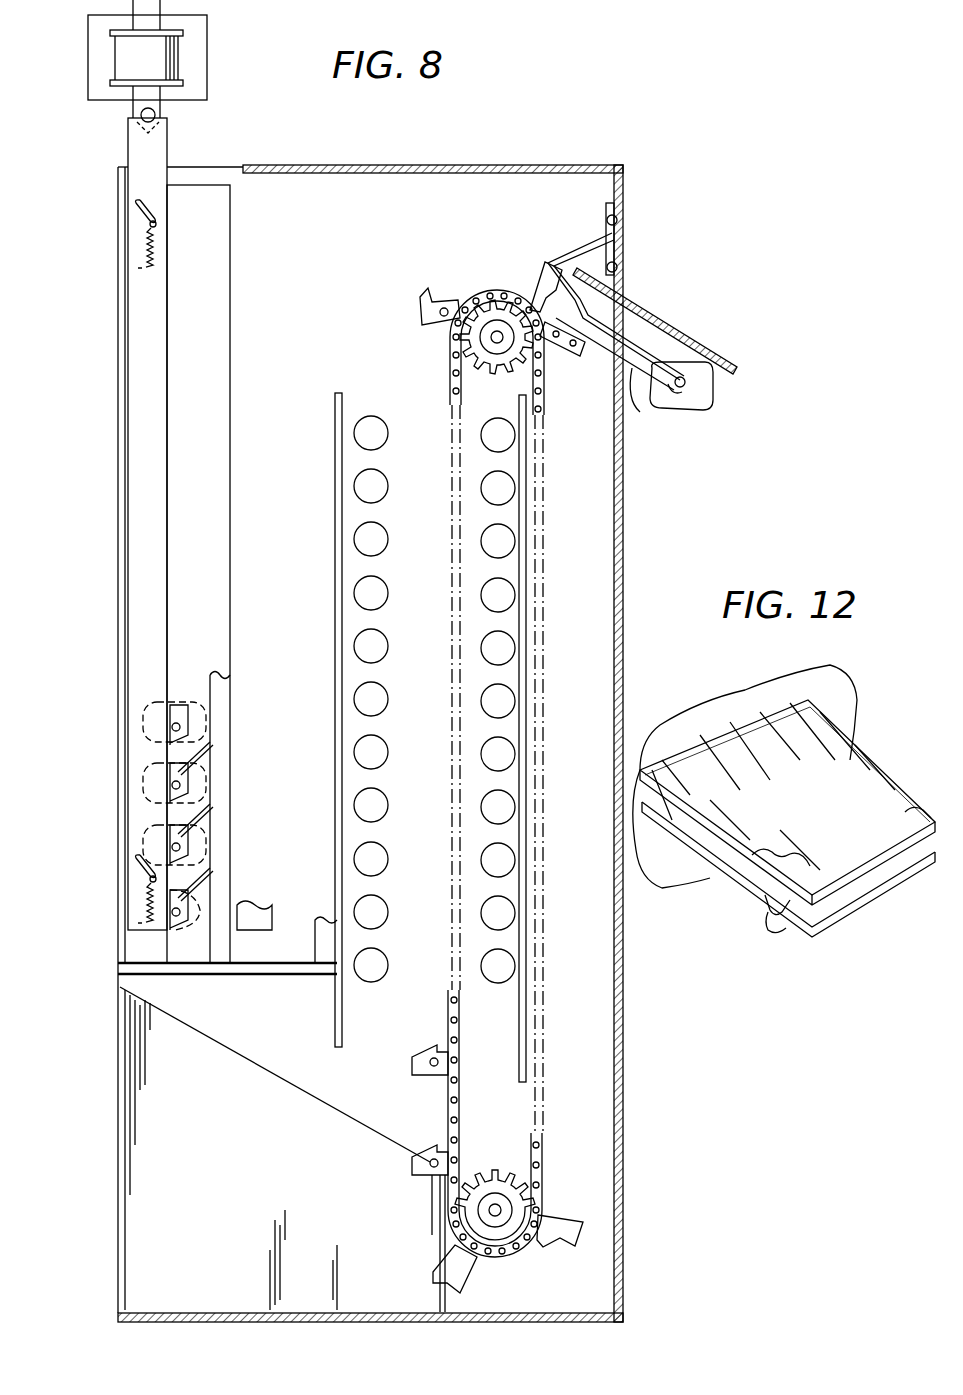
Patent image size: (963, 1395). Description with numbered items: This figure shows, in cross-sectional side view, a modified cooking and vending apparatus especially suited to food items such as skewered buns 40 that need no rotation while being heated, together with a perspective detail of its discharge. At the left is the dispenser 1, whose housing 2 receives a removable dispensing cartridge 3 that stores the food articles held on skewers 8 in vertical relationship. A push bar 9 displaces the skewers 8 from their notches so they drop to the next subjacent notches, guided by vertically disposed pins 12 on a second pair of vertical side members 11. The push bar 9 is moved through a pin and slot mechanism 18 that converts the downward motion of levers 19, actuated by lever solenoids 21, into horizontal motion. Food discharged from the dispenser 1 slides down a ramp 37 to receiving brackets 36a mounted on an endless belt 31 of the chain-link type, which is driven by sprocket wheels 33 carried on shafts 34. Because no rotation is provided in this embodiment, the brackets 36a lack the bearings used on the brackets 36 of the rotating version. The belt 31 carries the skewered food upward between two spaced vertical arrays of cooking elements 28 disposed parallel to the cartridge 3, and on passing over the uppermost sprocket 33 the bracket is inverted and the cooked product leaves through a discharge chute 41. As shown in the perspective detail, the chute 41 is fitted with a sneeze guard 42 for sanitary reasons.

In FIG. 8, the dispenser 1 is at (110, 440).
In FIG. 8, the housing 2 is at (540, 168).
In FIG. 8, the removable dispensing cartridge 3 is at (232, 320).
In FIG. 8, the skewers 8 is at (178, 723).
In FIG. 8, the push bar 9 is at (158, 338).
In FIG. 8, the second pair of vertical side members 11 is at (222, 855).
In FIG. 8, the pins 12 is at (472, 744).
In FIG. 8, the pin and slot mechanism 18 is at (142, 196).
In FIG. 8, the levers 19 is at (160, 104).
In FIG. 8, the lever solenoids 21 is at (162, 50).
In FIG. 8, the cooking elements 28 is at (387, 428).
In FIG. 8, the endless belt 31 is at (542, 1165).
In FIG. 8, the sprocket wheels 33 is at (500, 310).
In FIG. 8, the shafts 34 is at (487, 337).
In FIG. 8, the brackets 36 is at (543, 272).
In FIG. 8, the receiving brackets 36a is at (430, 1078).
In FIG. 8, the ramp 37 is at (252, 1062).
In FIG. 8, the skewered buns 40 is at (142, 722).
In FIG. 8, the discharge chute 41 is at (656, 408).
In FIG. 12, the discharge chute 41 is at (772, 918).
In FIG. 8, the sneeze guard 42 is at (665, 318).
In FIG. 12, the sneeze guard 42 is at (838, 775).